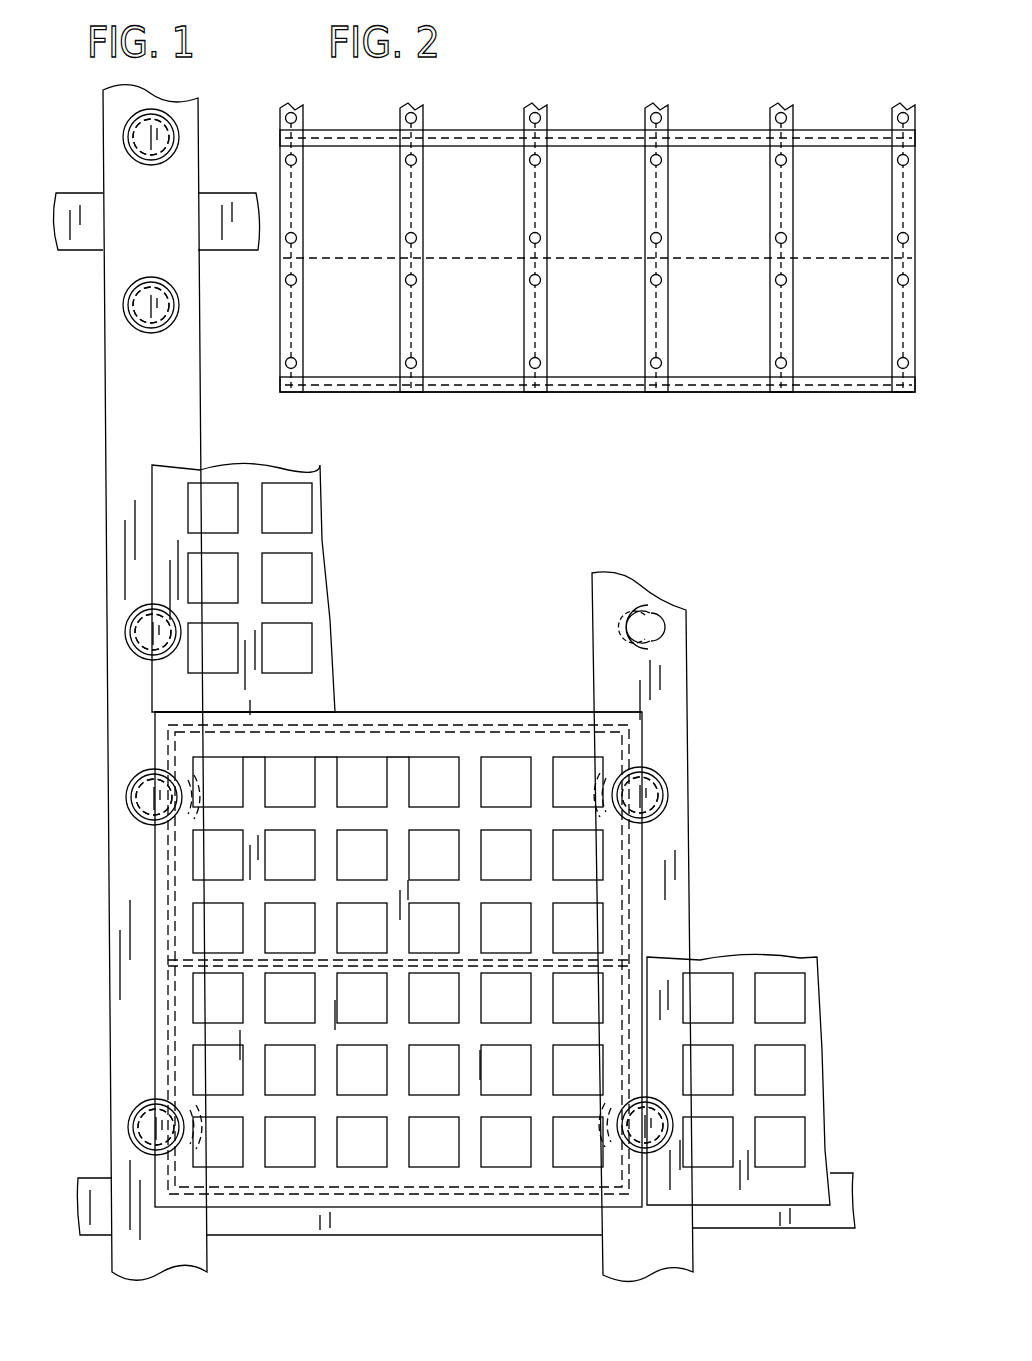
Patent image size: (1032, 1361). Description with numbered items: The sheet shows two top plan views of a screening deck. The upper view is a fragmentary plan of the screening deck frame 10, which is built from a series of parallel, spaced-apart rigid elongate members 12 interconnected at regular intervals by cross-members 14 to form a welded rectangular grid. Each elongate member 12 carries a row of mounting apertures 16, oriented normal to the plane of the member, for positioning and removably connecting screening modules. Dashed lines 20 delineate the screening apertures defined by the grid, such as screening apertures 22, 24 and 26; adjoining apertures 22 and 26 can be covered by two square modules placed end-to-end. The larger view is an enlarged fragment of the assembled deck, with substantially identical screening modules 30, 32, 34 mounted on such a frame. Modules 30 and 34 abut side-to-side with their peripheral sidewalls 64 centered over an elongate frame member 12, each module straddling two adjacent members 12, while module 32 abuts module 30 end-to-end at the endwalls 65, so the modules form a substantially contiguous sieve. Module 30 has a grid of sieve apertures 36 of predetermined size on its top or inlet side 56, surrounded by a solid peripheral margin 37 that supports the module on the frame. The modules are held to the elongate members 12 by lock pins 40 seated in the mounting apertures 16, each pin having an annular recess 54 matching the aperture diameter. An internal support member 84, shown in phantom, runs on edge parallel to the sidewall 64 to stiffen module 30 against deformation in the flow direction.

In FIG. 2, the screening deck frame 10 is at (608, 92).
In FIG. 1, the elongate members 12 is at (200, 348).
In FIG. 2, the elongate members 12 is at (597, 214).
In FIG. 1, the cross-members 14 is at (205, 192).
In FIG. 2, the cross-members 14 is at (598, 148).
In FIG. 1, the mounting apertures 16 is at (655, 630).
In FIG. 2, the mounting apertures 16 is at (533, 242).
In FIG. 2, the dashed lines 20 is at (735, 393).
In FIG. 2, the screening aperture 22 is at (645, 317).
In FIG. 2, the screening aperture 24 is at (843, 317).
In FIG. 2, the screening aperture 26 is at (719, 202).
In FIG. 1, the screening module 30 is at (352, 938).
In FIG. 1, the screening module 32 is at (322, 540).
In FIG. 1, the screening module 34 is at (765, 957).
In FIG. 1, the sieve apertures 36 is at (438, 848).
In FIG. 1, the solid peripheral margin 37 is at (165, 855).
In FIG. 1, the lock pin 40 is at (152, 165).
In FIG. 1, the annular recess 54 is at (123, 140).
In FIG. 1, the top or inlet side 56 is at (353, 750).
In FIG. 1, the peripheral sidewalls 64 is at (645, 902).
In FIG. 1, the endwalls 65 is at (403, 712).
In FIG. 1, the internal support member 84 is at (520, 722).